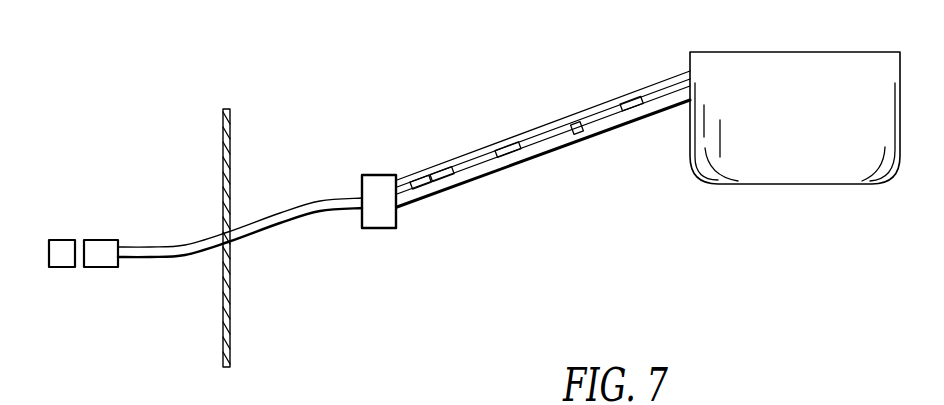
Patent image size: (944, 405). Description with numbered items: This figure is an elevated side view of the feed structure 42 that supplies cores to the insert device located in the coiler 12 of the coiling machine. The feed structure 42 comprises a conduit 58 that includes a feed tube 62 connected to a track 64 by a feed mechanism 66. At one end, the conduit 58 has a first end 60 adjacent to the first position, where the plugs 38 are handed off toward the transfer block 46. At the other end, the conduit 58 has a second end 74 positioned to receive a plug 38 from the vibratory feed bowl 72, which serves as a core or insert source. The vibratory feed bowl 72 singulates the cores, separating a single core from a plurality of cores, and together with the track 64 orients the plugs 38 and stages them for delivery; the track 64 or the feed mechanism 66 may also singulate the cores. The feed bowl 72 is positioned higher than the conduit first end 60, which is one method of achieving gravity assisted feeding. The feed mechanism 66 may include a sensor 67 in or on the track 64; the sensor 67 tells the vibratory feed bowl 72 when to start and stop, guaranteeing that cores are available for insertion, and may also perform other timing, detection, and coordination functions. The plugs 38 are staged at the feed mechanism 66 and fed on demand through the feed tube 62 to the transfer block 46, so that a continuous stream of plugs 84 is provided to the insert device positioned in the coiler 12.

The coiler 12 is at (231, 311).
The plug 38 is at (632, 106).
The feed structure 42 is at (478, 255).
The transfer block 46 is at (60, 238).
The conduit 58 is at (504, 197).
The first end 60 is at (100, 268).
The feed tube 62 is at (298, 203).
The track 64 is at (548, 124).
The feed mechanism 66 is at (371, 228).
The sensor 67 is at (579, 133).
The vibratory feed bowl 72 is at (752, 185).
The second end 74 is at (670, 77).
The continuous stream of plugs 84 is at (460, 193).